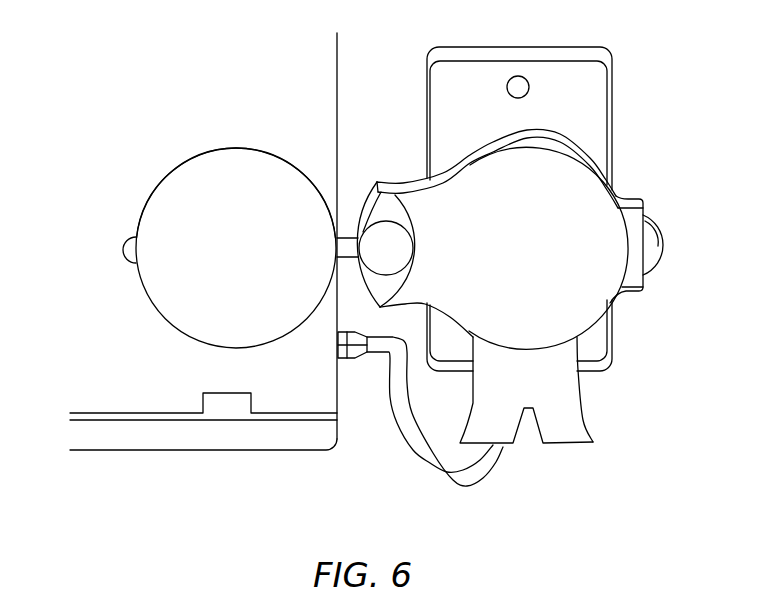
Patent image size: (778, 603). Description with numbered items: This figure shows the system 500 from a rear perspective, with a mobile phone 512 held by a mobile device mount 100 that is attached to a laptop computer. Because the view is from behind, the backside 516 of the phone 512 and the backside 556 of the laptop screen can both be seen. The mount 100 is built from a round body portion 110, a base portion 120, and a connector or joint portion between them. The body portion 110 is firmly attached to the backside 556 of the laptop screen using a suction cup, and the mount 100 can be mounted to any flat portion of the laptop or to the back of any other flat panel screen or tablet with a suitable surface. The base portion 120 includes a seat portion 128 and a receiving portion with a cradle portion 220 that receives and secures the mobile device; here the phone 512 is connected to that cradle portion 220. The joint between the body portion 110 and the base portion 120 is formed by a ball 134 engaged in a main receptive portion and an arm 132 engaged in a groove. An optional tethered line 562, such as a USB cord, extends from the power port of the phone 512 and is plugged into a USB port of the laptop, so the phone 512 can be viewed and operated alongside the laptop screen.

The system 500 is at (658, 41).
The mobile device mount 100 is at (658, 326).
The body portion 110 is at (251, 216).
The base portion 120 is at (543, 262).
The seat portion 128 is at (583, 415).
The arm 132 is at (337, 250).
The ball 134 is at (405, 247).
The cradle portion 220 is at (497, 137).
The mobile phone 512 is at (612, 135).
The backside of phone 516 is at (547, 211).
The backside of laptop screen 556 is at (337, 108).
The tethered line 562 is at (413, 462).